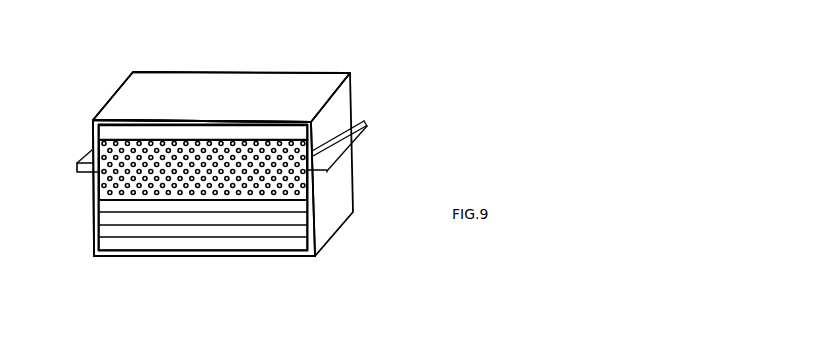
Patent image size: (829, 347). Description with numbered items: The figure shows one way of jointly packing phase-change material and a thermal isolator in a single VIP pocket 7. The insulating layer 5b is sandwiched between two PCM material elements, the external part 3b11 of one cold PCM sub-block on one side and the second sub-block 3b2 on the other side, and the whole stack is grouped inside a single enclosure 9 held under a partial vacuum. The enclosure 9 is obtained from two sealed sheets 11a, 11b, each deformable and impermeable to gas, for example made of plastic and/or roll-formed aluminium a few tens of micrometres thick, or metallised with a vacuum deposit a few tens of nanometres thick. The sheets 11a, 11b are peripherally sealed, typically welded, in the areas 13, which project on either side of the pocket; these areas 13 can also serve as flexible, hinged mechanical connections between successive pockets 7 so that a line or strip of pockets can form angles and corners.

The enclosure 9 is at (193, 81).
The sealed sheet 11a is at (115, 107).
The sealed sheet 11b is at (117, 256).
The peripheral sealing area 13 is at (93, 157).
The external part of PCM sub-block 3b11 is at (272, 135).
The insulating layer 5b is at (310, 203).
The PCM sub-block 3b2 is at (175, 217).
The VIP pocket 7 is at (282, 273).